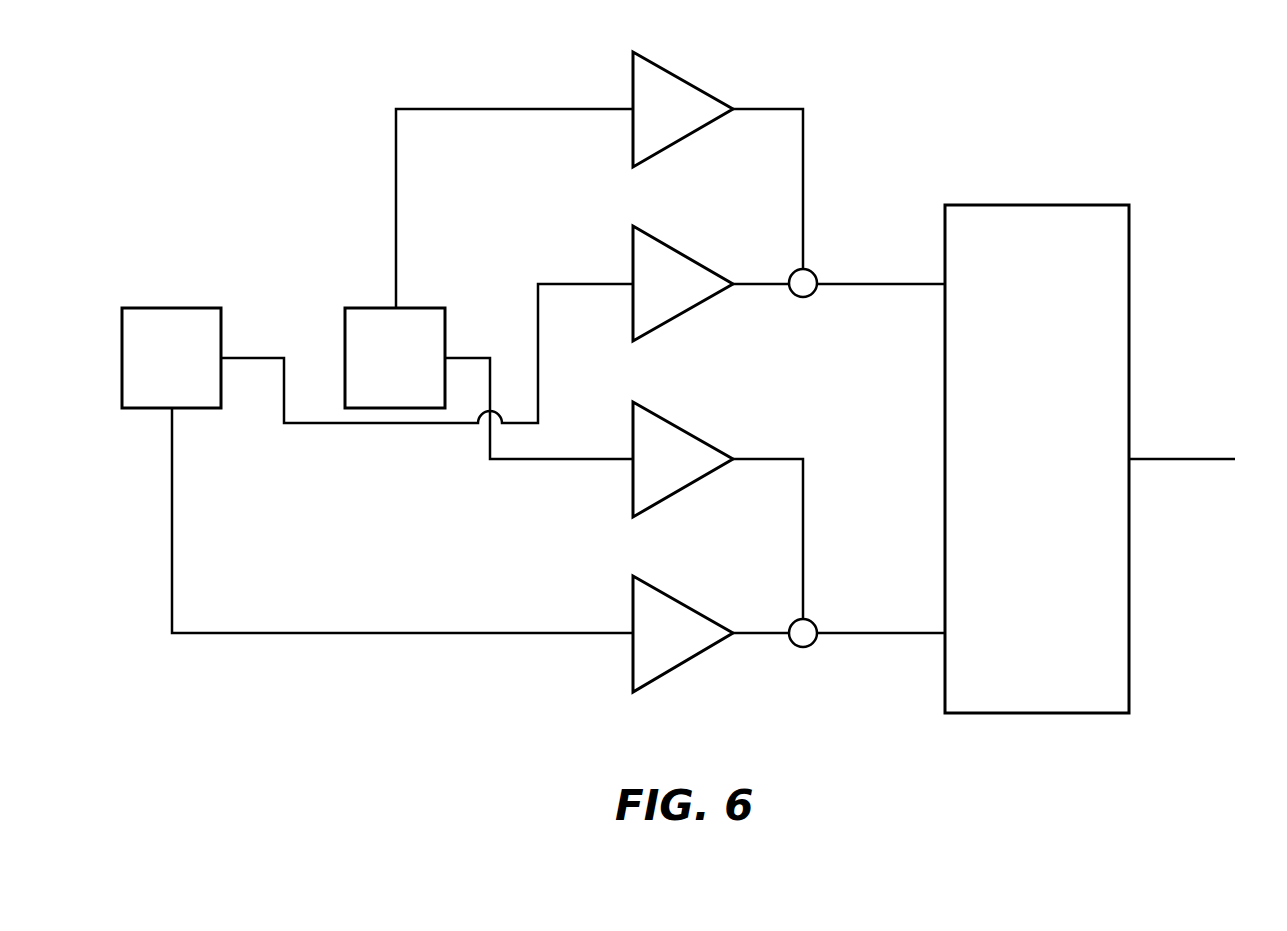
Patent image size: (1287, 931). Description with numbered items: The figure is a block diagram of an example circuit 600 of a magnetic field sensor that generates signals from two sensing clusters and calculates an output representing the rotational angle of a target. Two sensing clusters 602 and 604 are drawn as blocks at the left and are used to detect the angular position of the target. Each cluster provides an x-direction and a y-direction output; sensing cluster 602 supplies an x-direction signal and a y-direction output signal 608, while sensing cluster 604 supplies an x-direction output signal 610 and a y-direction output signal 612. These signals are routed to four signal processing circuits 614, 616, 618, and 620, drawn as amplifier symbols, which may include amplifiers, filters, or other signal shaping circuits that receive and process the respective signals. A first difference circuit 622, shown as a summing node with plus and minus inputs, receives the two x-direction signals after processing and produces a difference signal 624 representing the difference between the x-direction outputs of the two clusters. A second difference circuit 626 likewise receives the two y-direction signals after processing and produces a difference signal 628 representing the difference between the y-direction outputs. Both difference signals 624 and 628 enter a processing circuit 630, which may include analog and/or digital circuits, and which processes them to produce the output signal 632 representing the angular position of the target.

The circuit 600 is at (286, 149).
The sensing cluster 602 is at (374, 392).
The sensing cluster 604 is at (150, 392).
The output signal 608 is at (509, 109).
The output signal 610 is at (347, 423).
The output signal 612 is at (445, 633).
The signal processing circuit 614 is at (650, 121).
The signal processing circuit 616 is at (650, 296).
The signal processing circuit 618 is at (650, 471).
The signal processing circuit 620 is at (650, 645).
The difference circuit 622 is at (803, 299).
The difference signal 624 is at (915, 290).
The difference circuit 626 is at (803, 649).
The difference signal 628 is at (915, 640).
The processing circuit 630 is at (1016, 459).
The output signal 632 is at (1172, 459).